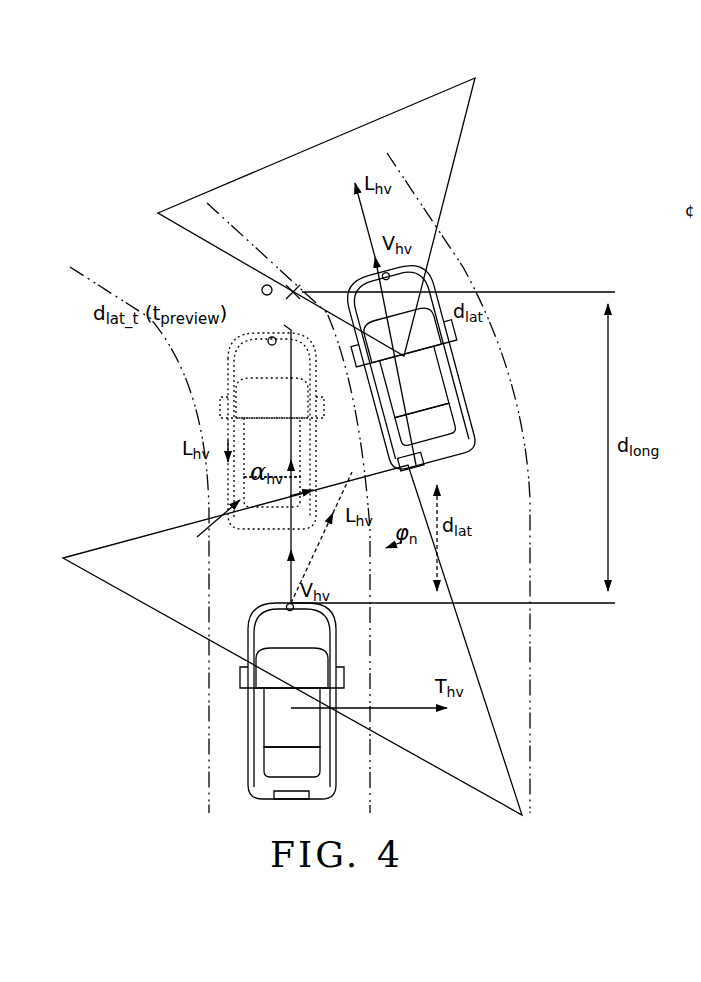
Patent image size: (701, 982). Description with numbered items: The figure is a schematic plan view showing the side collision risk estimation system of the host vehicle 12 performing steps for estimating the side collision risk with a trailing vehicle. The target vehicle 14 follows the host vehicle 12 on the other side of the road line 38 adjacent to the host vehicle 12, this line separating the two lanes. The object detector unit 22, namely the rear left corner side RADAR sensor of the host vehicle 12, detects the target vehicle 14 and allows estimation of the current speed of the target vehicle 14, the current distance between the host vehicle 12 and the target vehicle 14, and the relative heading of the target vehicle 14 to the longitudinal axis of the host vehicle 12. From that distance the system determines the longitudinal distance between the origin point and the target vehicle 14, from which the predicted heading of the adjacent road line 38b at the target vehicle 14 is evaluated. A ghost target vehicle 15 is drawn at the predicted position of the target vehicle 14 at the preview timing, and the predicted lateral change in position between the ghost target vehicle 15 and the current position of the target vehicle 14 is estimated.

The host vehicle 12 is at (484, 450).
The target vehicle 14 is at (350, 787).
The ghost target vehicle 15 is at (214, 382).
The object detector unit 22 is at (438, 471).
The road line 38 is at (209, 274).
The adjacent road line at the target vehicle 38b is at (388, 672).